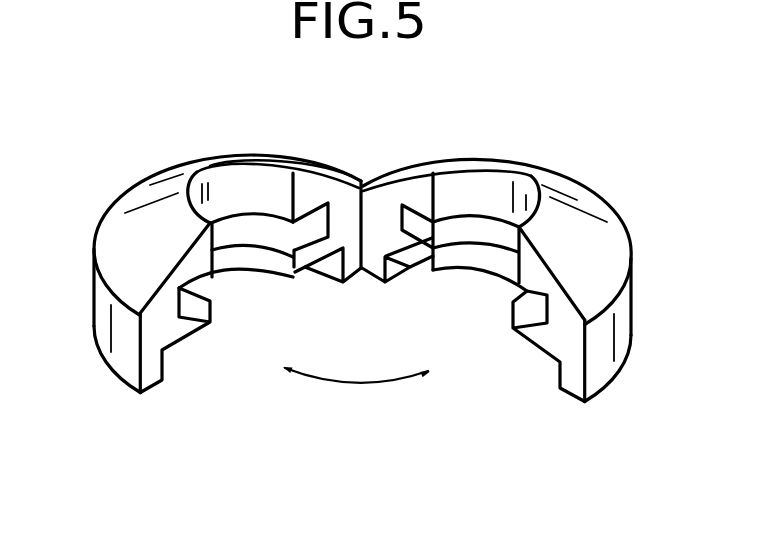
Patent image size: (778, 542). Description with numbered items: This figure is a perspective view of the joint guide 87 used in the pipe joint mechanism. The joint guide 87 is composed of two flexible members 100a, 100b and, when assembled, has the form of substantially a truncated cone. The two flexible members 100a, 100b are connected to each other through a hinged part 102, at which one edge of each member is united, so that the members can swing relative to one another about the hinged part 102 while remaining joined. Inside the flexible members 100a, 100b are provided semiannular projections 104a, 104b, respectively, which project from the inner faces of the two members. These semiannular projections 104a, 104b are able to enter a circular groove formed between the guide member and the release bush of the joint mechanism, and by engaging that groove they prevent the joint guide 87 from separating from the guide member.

The joint guide 87 is at (522, 141).
The flexible member 100a is at (128, 363).
The flexible member 100b is at (598, 369).
The hinged part 102 is at (357, 208).
The semiannular projection 104a is at (242, 257).
The semiannular projection 104b is at (478, 257).